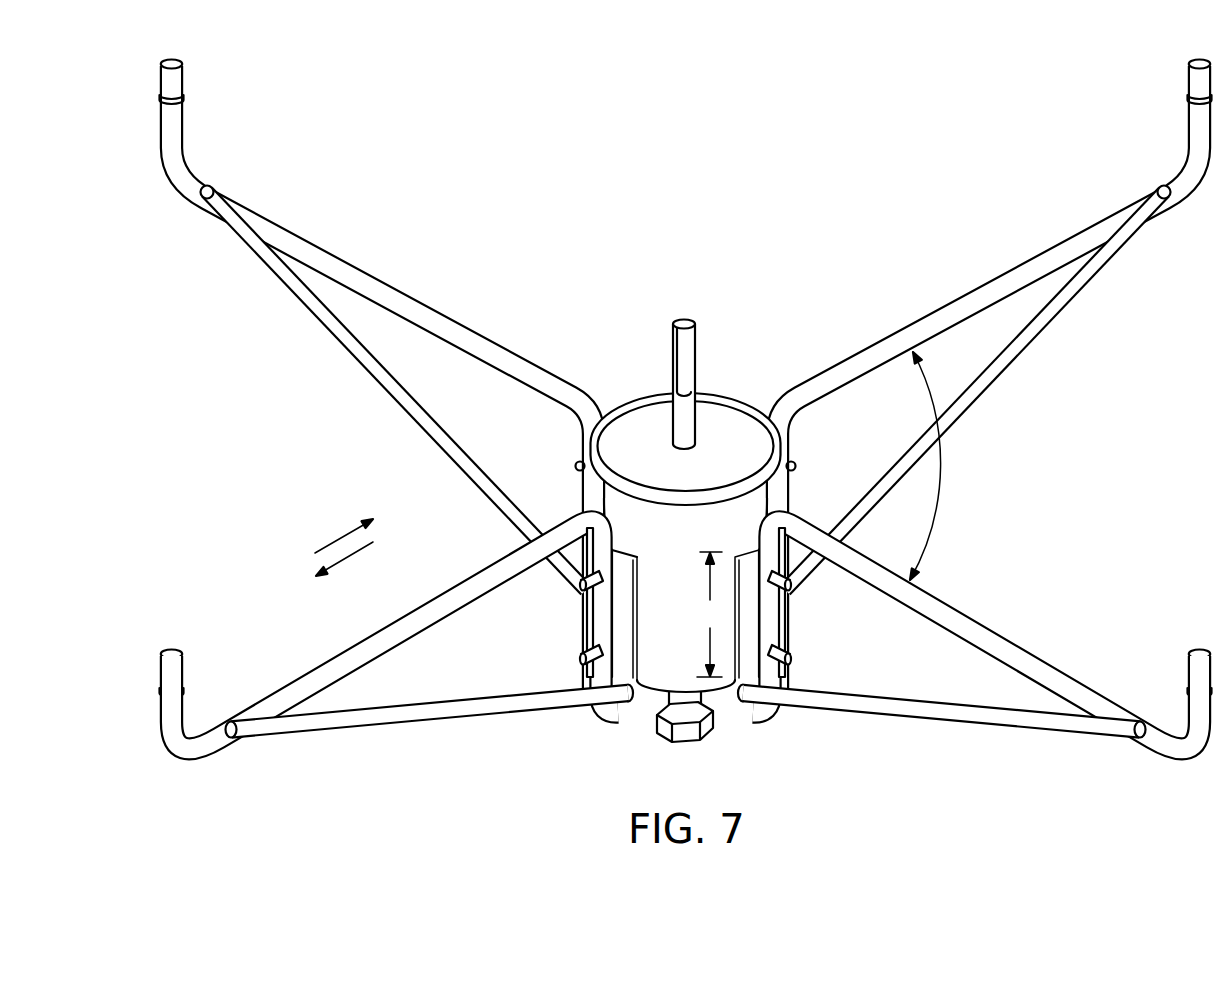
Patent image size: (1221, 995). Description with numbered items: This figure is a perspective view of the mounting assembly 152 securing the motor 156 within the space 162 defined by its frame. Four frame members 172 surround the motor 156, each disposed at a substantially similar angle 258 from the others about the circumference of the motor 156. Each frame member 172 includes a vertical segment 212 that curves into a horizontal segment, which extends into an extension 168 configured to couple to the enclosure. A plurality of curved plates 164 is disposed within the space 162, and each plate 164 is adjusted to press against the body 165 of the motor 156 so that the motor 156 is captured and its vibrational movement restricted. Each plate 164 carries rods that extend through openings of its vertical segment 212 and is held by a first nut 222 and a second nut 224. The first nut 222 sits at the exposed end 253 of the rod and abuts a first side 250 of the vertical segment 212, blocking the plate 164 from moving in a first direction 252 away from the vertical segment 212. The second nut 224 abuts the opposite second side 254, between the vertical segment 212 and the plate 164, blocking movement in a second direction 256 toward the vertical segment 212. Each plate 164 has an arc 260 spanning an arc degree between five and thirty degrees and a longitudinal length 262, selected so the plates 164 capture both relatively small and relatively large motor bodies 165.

The mounting assembly 152 is at (686, 422).
The motor 156 is at (724, 410).
The space 162 is at (624, 503).
The plate 164 is at (637, 550).
The body 165 is at (592, 488).
The extension 168 is at (177, 82).
The frame member 172 is at (355, 252).
The vertical segment 212 is at (600, 678).
The first nut 222 is at (592, 549).
The second nut 224 is at (637, 557).
The first side 250 is at (634, 663).
The first direction 252 is at (340, 538).
The exposed end 253 is at (580, 660).
The second side 254 is at (618, 607).
The second direction 256 is at (350, 557).
The angle 258 is at (950, 474).
The arc 260 is at (740, 550).
The longitudinal length 262 is at (711, 614).